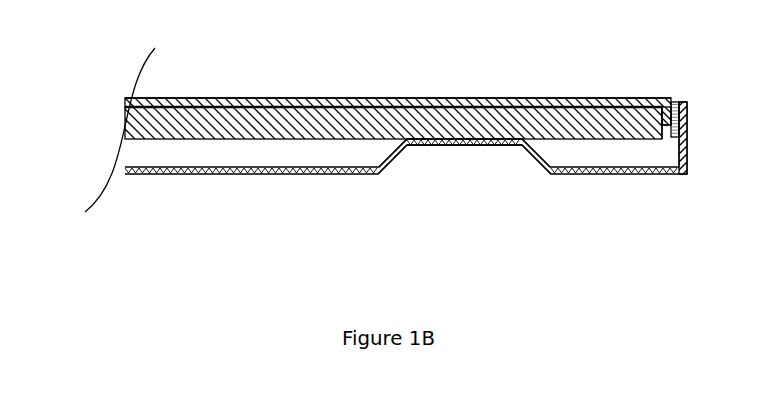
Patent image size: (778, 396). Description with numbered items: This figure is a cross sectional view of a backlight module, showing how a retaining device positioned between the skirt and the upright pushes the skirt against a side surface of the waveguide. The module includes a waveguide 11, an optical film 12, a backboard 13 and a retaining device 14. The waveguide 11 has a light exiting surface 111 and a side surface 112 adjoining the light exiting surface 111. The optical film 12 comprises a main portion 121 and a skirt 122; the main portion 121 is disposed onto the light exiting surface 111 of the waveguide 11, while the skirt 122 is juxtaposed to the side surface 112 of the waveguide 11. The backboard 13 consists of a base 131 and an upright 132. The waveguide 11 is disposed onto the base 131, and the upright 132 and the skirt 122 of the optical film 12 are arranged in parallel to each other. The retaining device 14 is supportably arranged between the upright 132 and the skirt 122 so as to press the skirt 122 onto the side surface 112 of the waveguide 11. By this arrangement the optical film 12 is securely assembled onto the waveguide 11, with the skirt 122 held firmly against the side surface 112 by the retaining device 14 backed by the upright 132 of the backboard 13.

The waveguide 11 is at (109, 129).
The light exiting surface 111 is at (445, 112).
The side surface 112 is at (663, 127).
The optical film 12 is at (109, 101).
The main portion 121 is at (381, 98).
The skirt 122 is at (667, 112).
The backboard 13 is at (104, 176).
The base 131 is at (555, 173).
The upright 132 is at (685, 128).
The retaining device 14 is at (677, 110).